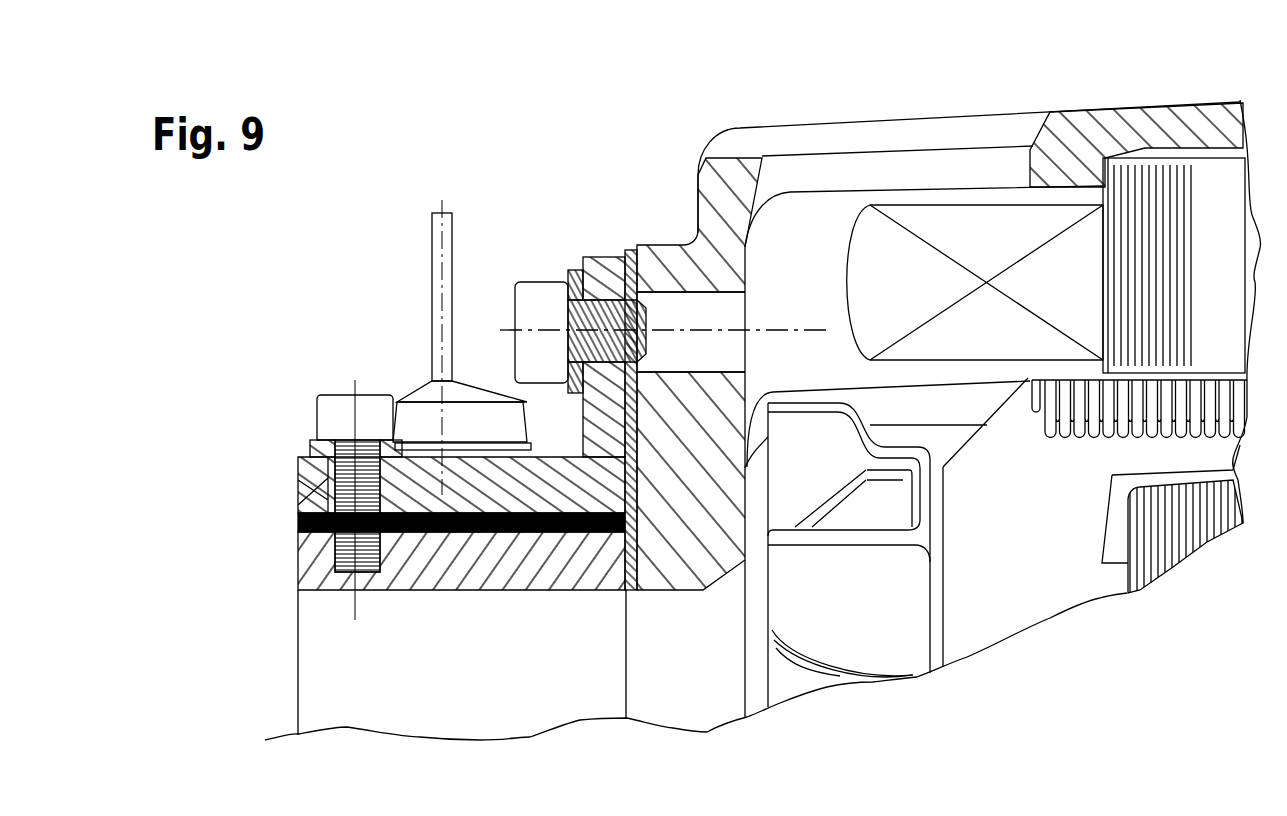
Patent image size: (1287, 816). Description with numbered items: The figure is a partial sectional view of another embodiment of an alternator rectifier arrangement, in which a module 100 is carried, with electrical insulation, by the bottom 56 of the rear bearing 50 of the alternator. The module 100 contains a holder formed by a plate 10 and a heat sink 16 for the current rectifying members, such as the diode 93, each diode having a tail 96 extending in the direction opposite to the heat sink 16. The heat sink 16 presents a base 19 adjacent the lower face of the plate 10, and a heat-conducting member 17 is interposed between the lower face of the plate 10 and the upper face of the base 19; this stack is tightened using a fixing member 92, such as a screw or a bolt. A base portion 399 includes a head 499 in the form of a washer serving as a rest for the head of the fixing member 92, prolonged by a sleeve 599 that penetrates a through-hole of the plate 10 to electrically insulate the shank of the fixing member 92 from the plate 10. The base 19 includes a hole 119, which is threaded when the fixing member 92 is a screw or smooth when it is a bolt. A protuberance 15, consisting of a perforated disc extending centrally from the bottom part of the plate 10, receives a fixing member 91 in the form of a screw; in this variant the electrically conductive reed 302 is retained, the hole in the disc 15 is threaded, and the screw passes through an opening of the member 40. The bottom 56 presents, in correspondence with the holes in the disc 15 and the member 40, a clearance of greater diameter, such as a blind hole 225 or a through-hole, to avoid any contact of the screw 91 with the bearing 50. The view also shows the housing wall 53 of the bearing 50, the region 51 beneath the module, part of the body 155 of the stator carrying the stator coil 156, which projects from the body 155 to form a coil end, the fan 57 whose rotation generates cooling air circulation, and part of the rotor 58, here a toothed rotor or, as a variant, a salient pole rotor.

The rear bearing 50 is at (1090, 99).
The housing wall 53 is at (764, 177).
The bottom 56 is at (678, 243).
The body of the stator 155 is at (1200, 180).
The stator coil 156 is at (962, 222).
The blind hole 225 is at (700, 292).
The member 40 is at (628, 248).
The protuberance 15 is at (597, 255).
The electrically conductive reed 302 is at (575, 272).
The fixing member 91 is at (537, 317).
The tail 96 is at (432, 237).
The module 100 is at (367, 382).
The diode 93 is at (416, 382).
The fixing member 92 is at (336, 392).
The base portion 399 is at (310, 426).
The head 499 is at (308, 450).
The plate 10 is at (296, 465).
The sleeve 599 is at (330, 490).
The heat-conducting member 17 is at (296, 520).
The base 19 is at (458, 562).
The hole 119 is at (352, 578).
The heat sink 16 is at (287, 576).
The base body 51 is at (693, 683).
The fan 57 is at (948, 638).
The rotor 58 is at (1030, 597).